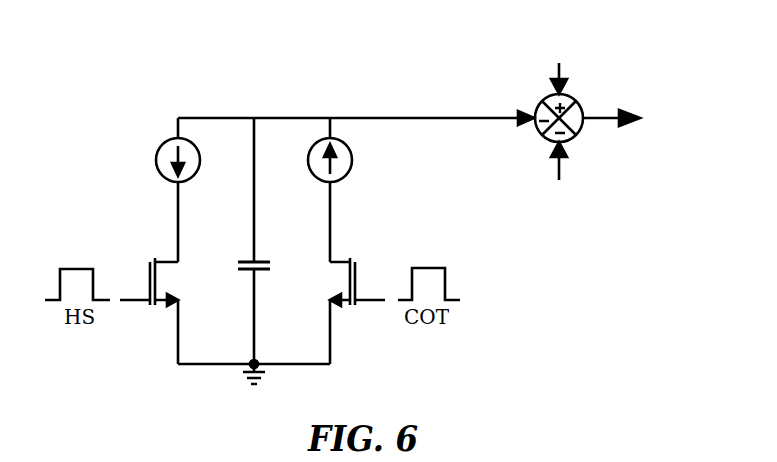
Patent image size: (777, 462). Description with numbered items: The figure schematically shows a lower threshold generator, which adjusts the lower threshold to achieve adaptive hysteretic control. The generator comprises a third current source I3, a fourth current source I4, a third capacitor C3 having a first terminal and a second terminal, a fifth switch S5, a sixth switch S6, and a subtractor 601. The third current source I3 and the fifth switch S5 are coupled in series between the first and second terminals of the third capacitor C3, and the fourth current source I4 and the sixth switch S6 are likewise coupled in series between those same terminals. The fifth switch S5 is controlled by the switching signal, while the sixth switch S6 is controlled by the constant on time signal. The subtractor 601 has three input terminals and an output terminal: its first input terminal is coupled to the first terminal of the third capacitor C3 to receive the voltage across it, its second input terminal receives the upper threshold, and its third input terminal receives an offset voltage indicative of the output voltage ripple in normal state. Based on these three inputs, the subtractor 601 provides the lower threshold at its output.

The subtractor 601 is at (538, 97).
The third current source I3 is at (163, 160).
The fourth current source I4 is at (344, 160).
The third capacitor C3 is at (248, 265).
The fifth switch S5 is at (149, 299).
The sixth switch S6 is at (357, 299).